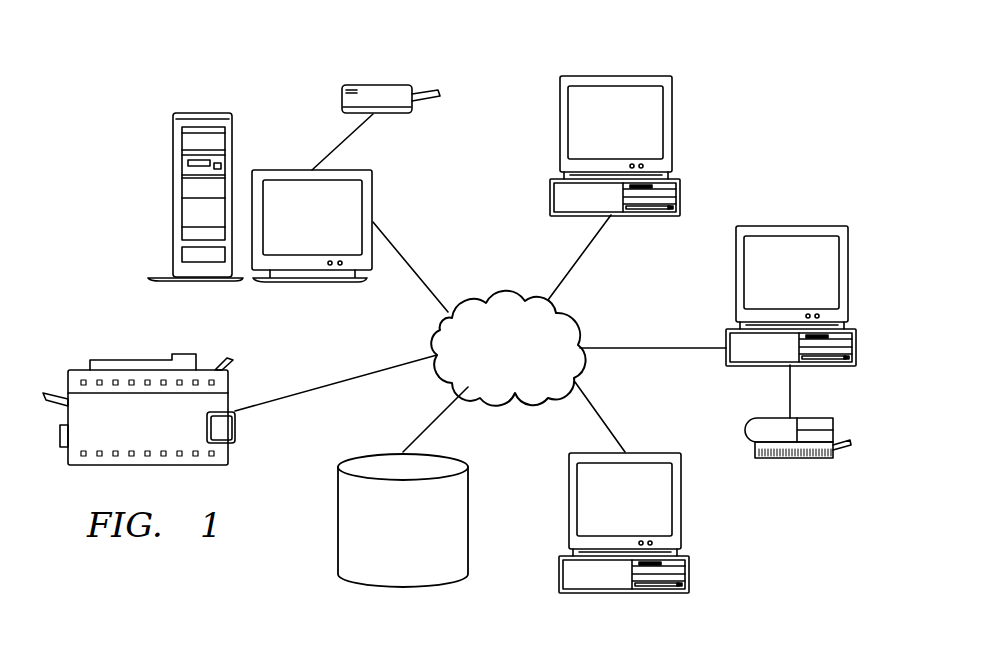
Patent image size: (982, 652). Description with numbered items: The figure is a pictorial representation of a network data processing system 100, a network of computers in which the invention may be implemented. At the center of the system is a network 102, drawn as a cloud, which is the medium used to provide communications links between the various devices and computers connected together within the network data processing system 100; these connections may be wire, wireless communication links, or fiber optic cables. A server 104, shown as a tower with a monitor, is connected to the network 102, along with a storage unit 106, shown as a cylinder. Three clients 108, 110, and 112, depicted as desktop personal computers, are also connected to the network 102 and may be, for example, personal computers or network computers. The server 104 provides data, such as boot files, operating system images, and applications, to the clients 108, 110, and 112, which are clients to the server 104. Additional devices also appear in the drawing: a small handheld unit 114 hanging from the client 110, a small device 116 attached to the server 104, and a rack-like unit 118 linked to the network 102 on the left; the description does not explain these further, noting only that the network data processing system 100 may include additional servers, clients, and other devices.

The network data processing system 100 is at (779, 148).
The network 102 is at (530, 361).
The server 104 is at (333, 225).
The storage unit 106 is at (425, 537).
The client 108 is at (637, 133).
The client 110 is at (813, 283).
The client 112 is at (645, 510).
The personal digital assistant 114 is at (790, 459).
The wireless device 116 is at (341, 95).
The network device 118 is at (163, 433).